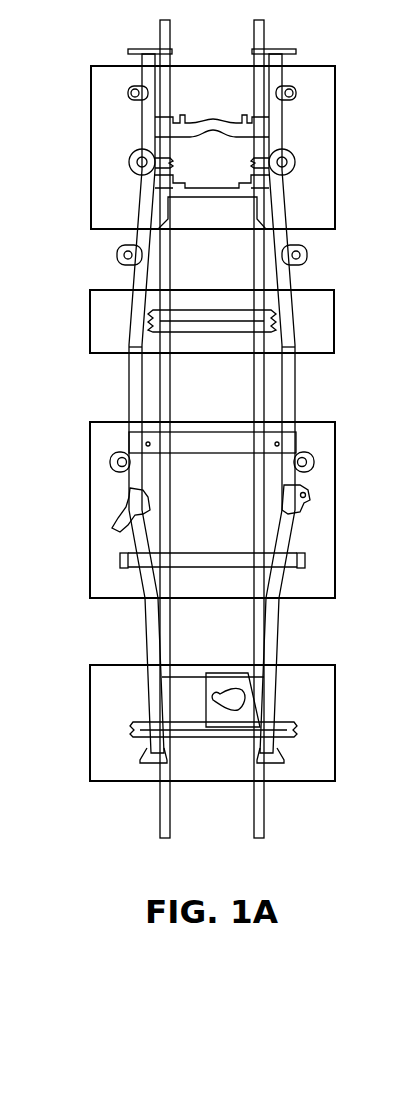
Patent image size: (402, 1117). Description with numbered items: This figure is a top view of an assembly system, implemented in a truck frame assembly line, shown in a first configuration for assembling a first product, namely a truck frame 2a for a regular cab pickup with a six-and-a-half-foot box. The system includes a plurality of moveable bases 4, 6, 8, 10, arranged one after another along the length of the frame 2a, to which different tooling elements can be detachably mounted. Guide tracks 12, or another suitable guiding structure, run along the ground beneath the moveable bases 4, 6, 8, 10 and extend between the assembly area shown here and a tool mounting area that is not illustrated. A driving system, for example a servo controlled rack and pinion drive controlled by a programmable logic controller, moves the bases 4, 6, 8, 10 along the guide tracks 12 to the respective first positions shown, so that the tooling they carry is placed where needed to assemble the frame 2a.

The frame 2a is at (130, 396).
The moveable base 4 is at (91, 137).
The moveable base 6 is at (90, 327).
The moveable base 8 is at (90, 516).
The moveable base 10 is at (90, 703).
The guide tracks 12 is at (162, 818).